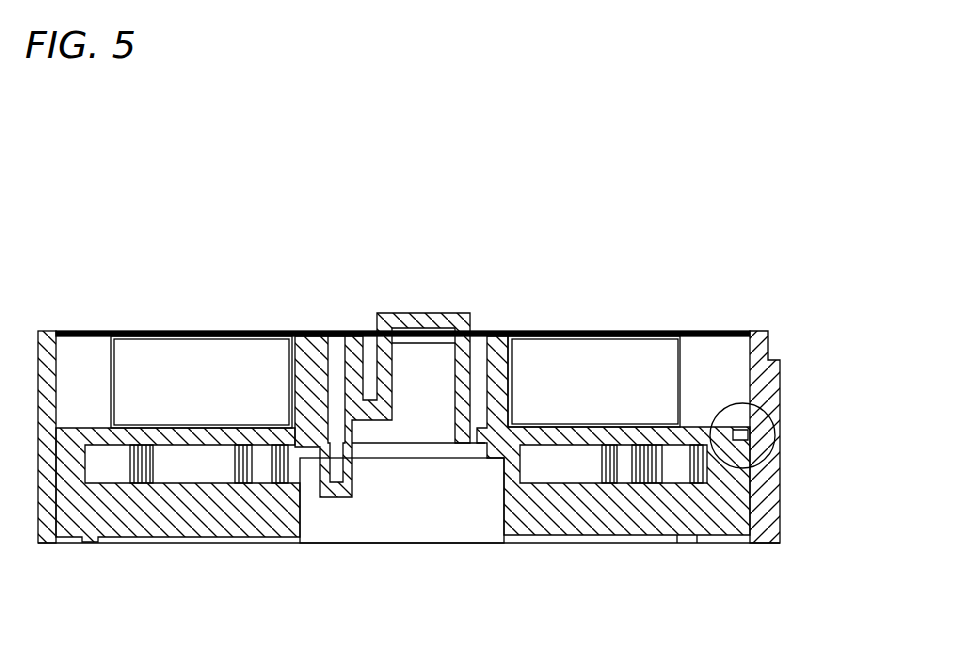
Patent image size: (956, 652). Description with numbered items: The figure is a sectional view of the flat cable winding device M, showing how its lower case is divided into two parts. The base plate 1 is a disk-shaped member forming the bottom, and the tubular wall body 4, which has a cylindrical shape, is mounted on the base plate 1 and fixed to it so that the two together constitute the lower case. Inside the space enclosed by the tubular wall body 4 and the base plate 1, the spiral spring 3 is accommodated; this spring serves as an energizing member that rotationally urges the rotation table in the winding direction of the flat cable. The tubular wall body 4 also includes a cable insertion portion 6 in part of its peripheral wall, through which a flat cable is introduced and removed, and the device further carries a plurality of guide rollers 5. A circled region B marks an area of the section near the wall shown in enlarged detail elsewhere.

The base plate 1 is at (612, 522).
The spiral spring 3 is at (665, 468).
The tubular wall body 4 is at (767, 332).
The guide roller 5 is at (248, 347).
The cable insertion portion 6 is at (495, 330).
The flat cable winding device M is at (598, 278).
The detail region B is at (750, 433).